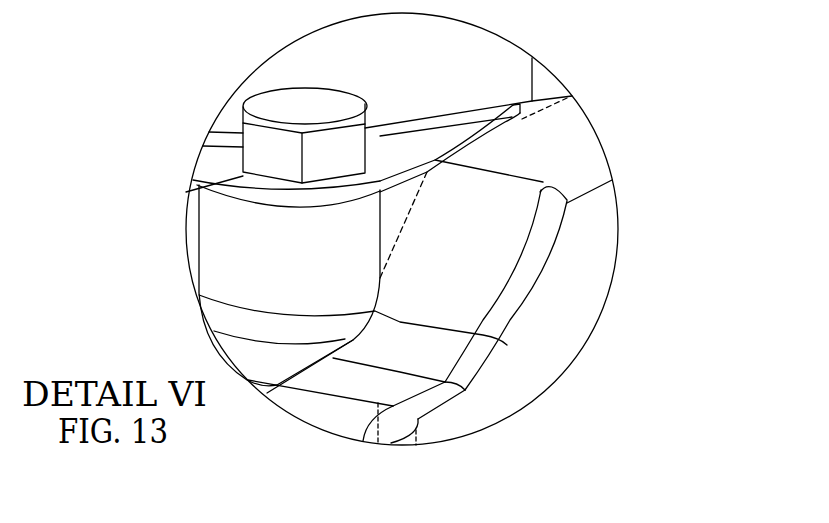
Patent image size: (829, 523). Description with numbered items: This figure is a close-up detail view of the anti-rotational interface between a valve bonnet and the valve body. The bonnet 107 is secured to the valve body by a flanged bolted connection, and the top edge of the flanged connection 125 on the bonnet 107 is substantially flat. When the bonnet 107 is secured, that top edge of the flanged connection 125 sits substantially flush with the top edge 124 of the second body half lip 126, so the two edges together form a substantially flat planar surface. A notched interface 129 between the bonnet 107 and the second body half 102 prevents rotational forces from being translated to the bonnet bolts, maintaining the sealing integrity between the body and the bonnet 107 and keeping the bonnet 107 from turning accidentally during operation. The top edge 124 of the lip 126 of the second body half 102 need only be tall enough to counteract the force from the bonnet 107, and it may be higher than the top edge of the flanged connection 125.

The second body half 102 is at (538, 321).
The bonnet 107 is at (402, 137).
The top edge of the second body half lip 124 is at (518, 163).
The flanged connection 125 is at (453, 138).
The second body half lip 126 is at (475, 257).
The notched interface 129 is at (402, 224).